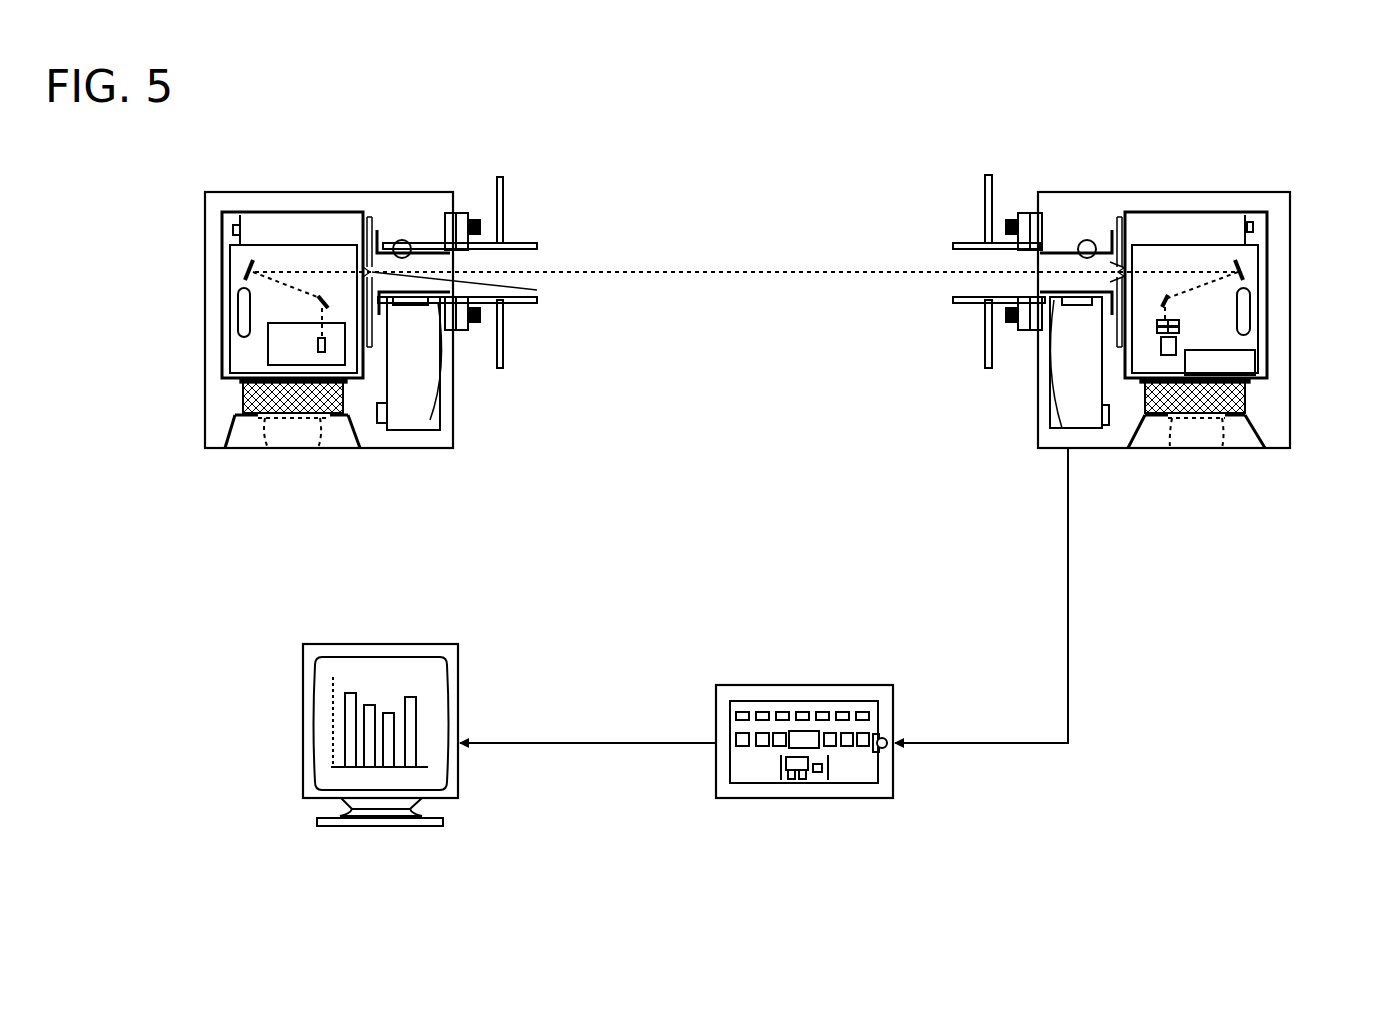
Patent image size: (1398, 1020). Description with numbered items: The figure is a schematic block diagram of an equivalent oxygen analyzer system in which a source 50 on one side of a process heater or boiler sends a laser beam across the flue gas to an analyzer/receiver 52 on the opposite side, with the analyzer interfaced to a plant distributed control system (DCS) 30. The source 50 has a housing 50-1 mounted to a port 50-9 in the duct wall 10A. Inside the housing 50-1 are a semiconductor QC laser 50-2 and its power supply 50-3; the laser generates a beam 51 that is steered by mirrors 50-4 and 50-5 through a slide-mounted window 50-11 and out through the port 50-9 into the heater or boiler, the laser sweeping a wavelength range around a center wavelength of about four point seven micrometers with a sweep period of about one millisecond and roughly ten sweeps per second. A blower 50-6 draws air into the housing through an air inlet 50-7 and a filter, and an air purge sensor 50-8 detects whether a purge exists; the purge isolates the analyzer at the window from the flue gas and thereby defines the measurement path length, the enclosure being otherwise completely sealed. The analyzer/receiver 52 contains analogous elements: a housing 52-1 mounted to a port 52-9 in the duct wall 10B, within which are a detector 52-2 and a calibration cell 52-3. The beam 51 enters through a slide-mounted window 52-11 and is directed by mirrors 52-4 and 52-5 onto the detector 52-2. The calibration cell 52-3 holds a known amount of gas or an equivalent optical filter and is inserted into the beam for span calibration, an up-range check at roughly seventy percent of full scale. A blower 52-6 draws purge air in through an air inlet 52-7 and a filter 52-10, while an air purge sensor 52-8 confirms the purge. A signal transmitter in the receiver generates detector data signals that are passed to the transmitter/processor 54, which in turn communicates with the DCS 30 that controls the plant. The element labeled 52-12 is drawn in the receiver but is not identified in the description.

The source 50 is at (373, 326).
The housing 50-1 is at (210, 450).
The semiconductor QC laser 50-2 is at (318, 350).
The power supply 50-3 is at (318, 344).
The mirror 50-4 is at (323, 296).
The mirror 50-5 is at (248, 272).
The blower 50-6 is at (418, 432).
The air inlet 50-7 is at (295, 432).
The air purge sensor 50-8 is at (405, 240).
The port 50-9 is at (512, 253).
The slide-mounted window 50-11 is at (537, 290).
The duct wall 10A is at (503, 200).
The duct wall 10B is at (985, 195).
The beam 51 is at (851, 275).
The analyzer/receiver 52 is at (1116, 301).
The housing 52-1 is at (1290, 346).
The detector 52-2 is at (1160, 347).
The calibration cell 52-3 is at (1180, 326).
The mirror 52-4 is at (1163, 296).
The mirror 52-5 is at (1242, 265).
The blower 52-6 is at (1075, 428).
The air inlet 52-7 is at (1195, 435).
The air purge sensor 52-8 is at (1085, 240).
The port 52-9 is at (957, 258).
The filter 52-10 is at (243, 397).
The slide-mounted window 52-11 is at (1113, 274).
The control circuit 52-12 is at (1225, 362).
The transmitter/processor 54 is at (797, 685).
The distributed control system (DCS) 30 is at (303, 708).